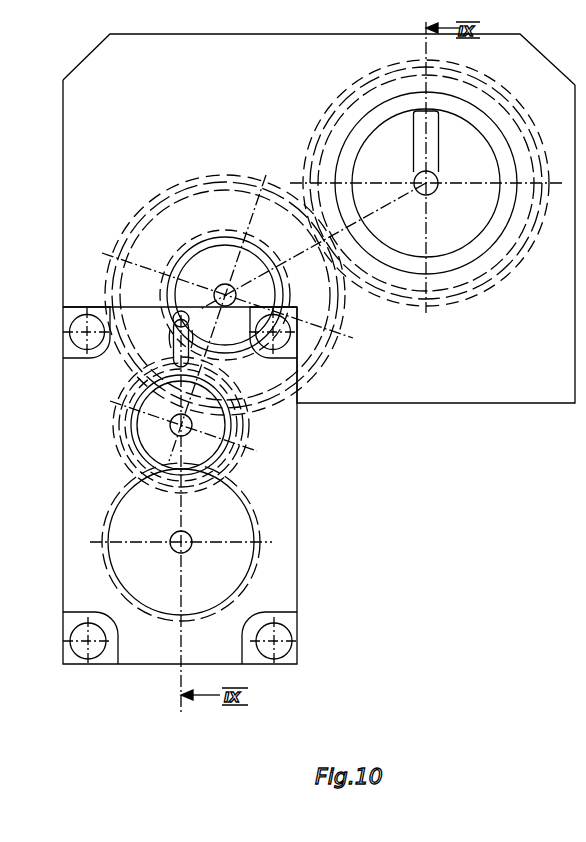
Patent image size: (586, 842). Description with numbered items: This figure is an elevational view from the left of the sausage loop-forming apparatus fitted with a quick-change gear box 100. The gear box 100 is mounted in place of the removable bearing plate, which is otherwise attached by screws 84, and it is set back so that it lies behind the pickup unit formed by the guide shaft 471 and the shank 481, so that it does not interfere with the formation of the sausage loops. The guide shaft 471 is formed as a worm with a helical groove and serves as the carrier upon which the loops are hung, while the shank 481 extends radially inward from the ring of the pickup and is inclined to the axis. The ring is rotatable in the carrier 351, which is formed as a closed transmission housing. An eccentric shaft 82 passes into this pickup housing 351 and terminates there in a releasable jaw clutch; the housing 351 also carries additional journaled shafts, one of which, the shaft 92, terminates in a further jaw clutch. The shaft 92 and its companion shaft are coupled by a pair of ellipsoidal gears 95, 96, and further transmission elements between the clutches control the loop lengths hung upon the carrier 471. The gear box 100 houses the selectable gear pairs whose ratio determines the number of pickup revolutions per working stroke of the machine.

The shank 481 is at (433, 148).
The guide shaft 471 is at (433, 195).
The carrier (pickup housing) 351 is at (467, 398).
The ellipsoidal gear 96 is at (177, 250).
The ellipsoidal gear 95 is at (118, 383).
The shaft 92 is at (170, 427).
The eccentric shaft 82 is at (193, 538).
The gear box 100 is at (287, 600).
The screws 84 is at (97, 652).